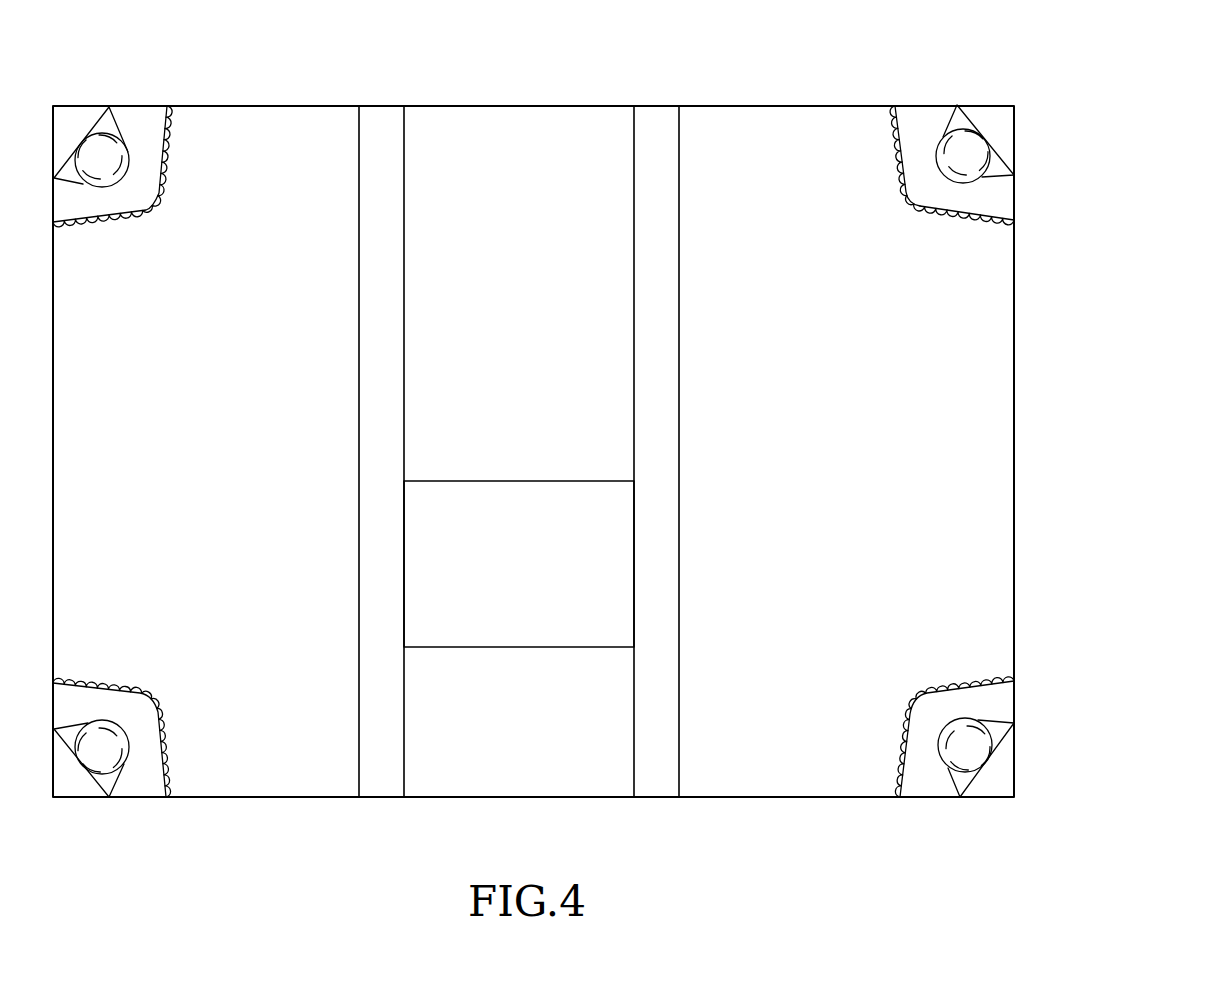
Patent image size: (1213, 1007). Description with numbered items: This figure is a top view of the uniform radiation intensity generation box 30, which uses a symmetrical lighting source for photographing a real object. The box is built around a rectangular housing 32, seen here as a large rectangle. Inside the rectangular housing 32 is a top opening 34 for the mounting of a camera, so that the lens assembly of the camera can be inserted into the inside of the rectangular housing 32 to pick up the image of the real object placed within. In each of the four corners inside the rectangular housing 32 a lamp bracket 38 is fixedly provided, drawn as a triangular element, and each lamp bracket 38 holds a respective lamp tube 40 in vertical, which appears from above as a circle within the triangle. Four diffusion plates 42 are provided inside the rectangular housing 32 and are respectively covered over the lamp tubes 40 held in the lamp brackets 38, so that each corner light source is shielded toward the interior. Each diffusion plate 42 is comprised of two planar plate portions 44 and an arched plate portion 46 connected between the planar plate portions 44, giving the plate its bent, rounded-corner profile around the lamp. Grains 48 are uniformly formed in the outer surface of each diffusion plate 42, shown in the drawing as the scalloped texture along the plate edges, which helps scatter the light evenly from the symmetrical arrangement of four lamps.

The uniform radiation intensity generation box 30 is at (1097, 117).
The rectangular housing 32 is at (735, 106).
The top opening 34 is at (583, 568).
The lamp bracket 38 is at (1003, 730).
The lamp tube 40 is at (957, 755).
The diffusion plate 42 is at (891, 174).
The planar plate portion 44 is at (902, 122).
The arched plate portion 46 is at (917, 197).
The grains 48 is at (970, 218).